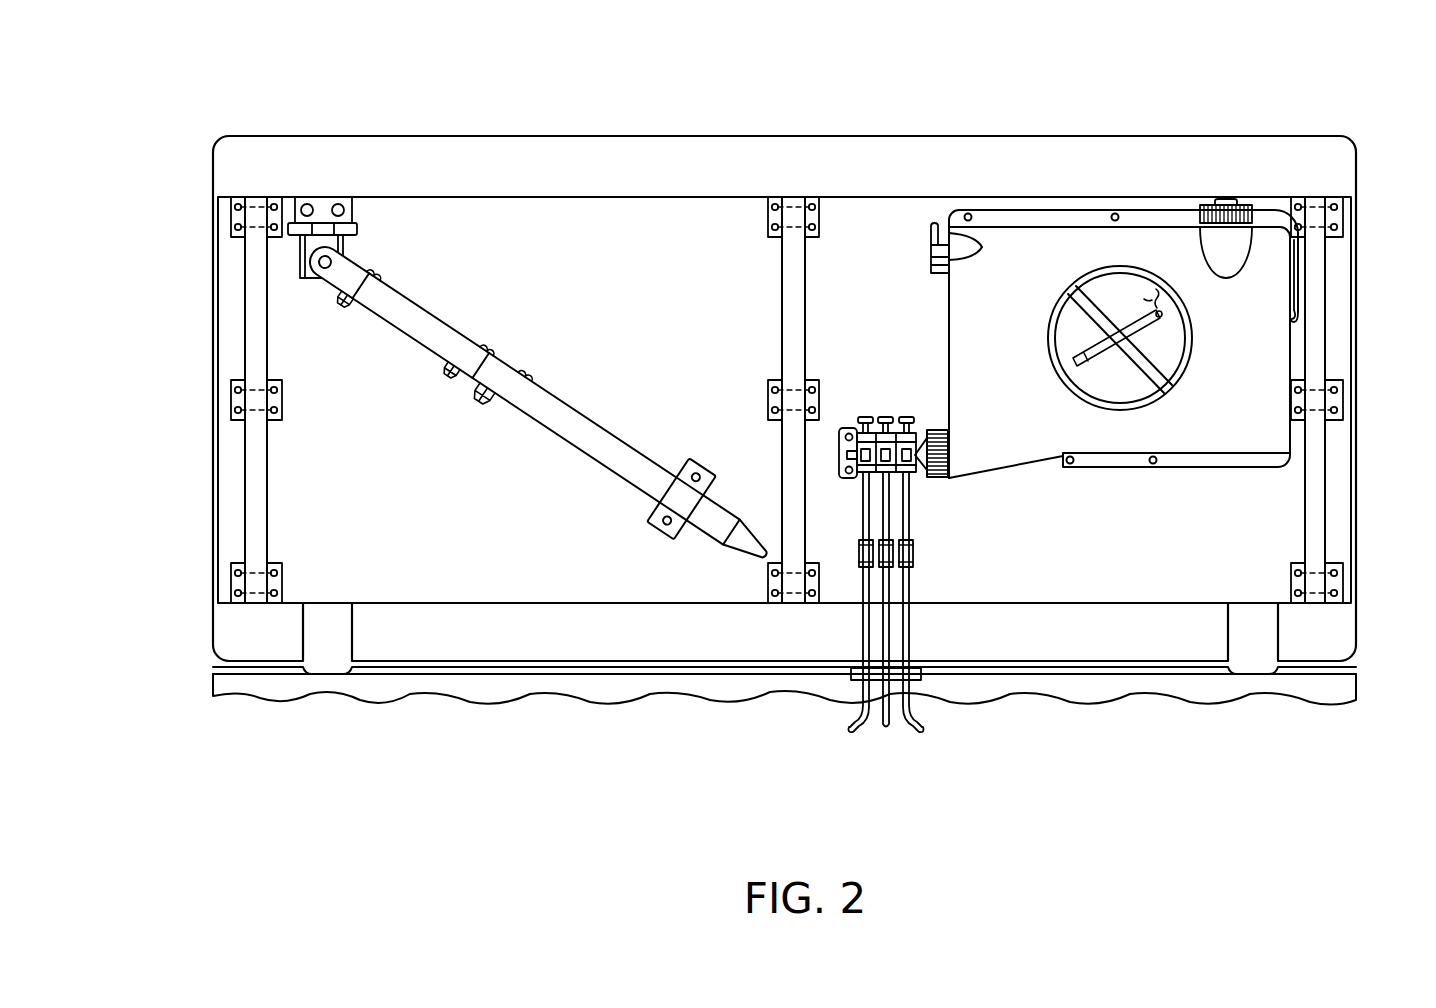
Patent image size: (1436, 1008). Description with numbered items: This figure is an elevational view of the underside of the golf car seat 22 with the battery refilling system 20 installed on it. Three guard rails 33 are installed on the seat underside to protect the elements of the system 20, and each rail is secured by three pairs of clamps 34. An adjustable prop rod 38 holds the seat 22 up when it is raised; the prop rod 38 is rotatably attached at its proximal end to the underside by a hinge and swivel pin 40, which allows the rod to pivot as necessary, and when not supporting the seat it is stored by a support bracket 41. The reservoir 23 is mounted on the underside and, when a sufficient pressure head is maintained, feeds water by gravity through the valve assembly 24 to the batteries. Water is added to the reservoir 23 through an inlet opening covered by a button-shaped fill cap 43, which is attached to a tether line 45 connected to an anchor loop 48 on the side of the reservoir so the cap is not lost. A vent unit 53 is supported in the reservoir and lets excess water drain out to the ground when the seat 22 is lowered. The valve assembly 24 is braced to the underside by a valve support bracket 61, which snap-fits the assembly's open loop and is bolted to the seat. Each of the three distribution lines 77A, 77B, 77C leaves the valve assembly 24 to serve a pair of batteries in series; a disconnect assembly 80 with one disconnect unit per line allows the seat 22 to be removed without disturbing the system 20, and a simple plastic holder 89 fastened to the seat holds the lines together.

The refilling system 20 is at (1326, 66).
The golf car seat 22 is at (1252, 137).
The reservoir 23 is at (1273, 342).
The valve assembly 24 is at (905, 472).
The guard rails 33 is at (245, 472).
The clamps 34 is at (1346, 212).
The prop rod 38 is at (533, 420).
The hinge and swivel pin 40 is at (322, 232).
The support bracket 41 is at (668, 542).
The fill cap 43 is at (1203, 205).
The tether line 45 is at (1302, 258).
The anchor loop 48 is at (1302, 313).
The vent unit 53 is at (931, 230).
The valve support bracket 61 is at (838, 476).
The distribution line 77A is at (920, 729).
The distribution line 77B is at (886, 728).
The distribution line 77C is at (848, 729).
The disconnect assembly 80 is at (913, 567).
The plastic holder 89 is at (851, 678).